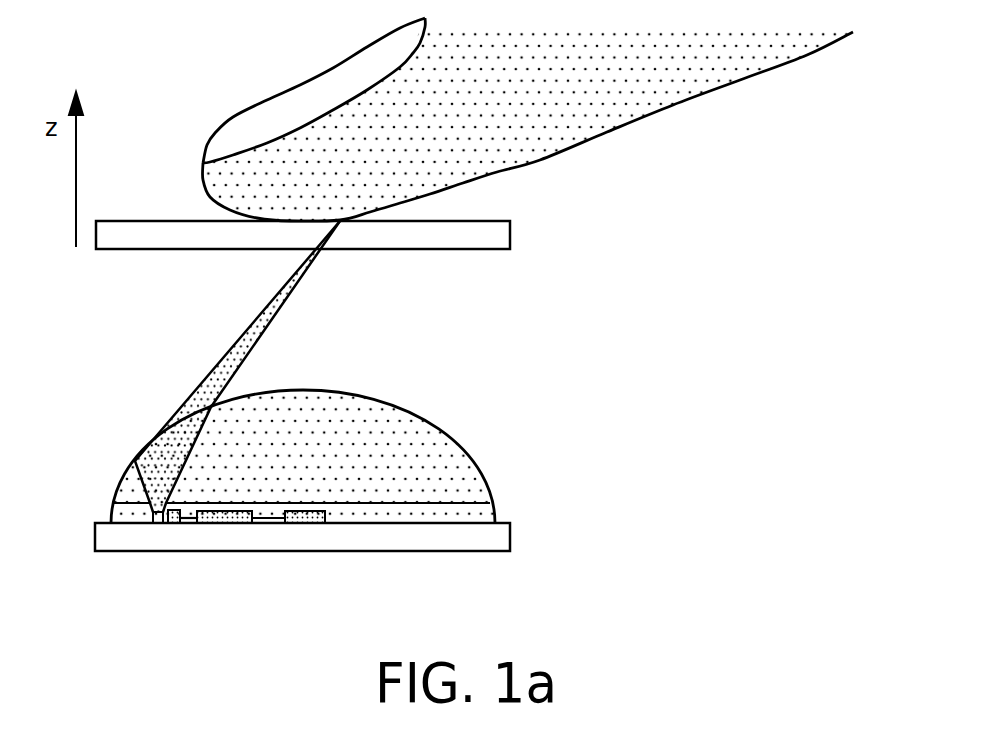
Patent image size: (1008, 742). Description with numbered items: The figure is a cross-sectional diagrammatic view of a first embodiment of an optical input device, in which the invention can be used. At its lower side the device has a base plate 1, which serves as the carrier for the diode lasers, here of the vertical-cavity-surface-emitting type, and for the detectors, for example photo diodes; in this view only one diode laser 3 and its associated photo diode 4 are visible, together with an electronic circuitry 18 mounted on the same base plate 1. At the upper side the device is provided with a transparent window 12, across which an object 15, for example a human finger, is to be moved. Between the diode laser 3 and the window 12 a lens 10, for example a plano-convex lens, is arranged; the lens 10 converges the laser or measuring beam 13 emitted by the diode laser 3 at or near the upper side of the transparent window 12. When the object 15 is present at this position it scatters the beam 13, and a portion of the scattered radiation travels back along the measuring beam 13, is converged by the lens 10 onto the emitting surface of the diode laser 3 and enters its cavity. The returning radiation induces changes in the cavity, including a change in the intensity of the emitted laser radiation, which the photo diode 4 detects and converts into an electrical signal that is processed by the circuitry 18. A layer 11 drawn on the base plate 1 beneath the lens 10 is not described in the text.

The base plate 1 is at (495, 535).
The diode laser 3 is at (158, 523).
The photo diode 4 is at (174, 523).
The lens 10 is at (418, 435).
The transparent layer 11 is at (482, 510).
The transparent window 12 is at (510, 232).
The laser beam 13 is at (248, 329).
The object 15 is at (617, 117).
The electronic circuitry 18 is at (233, 523).